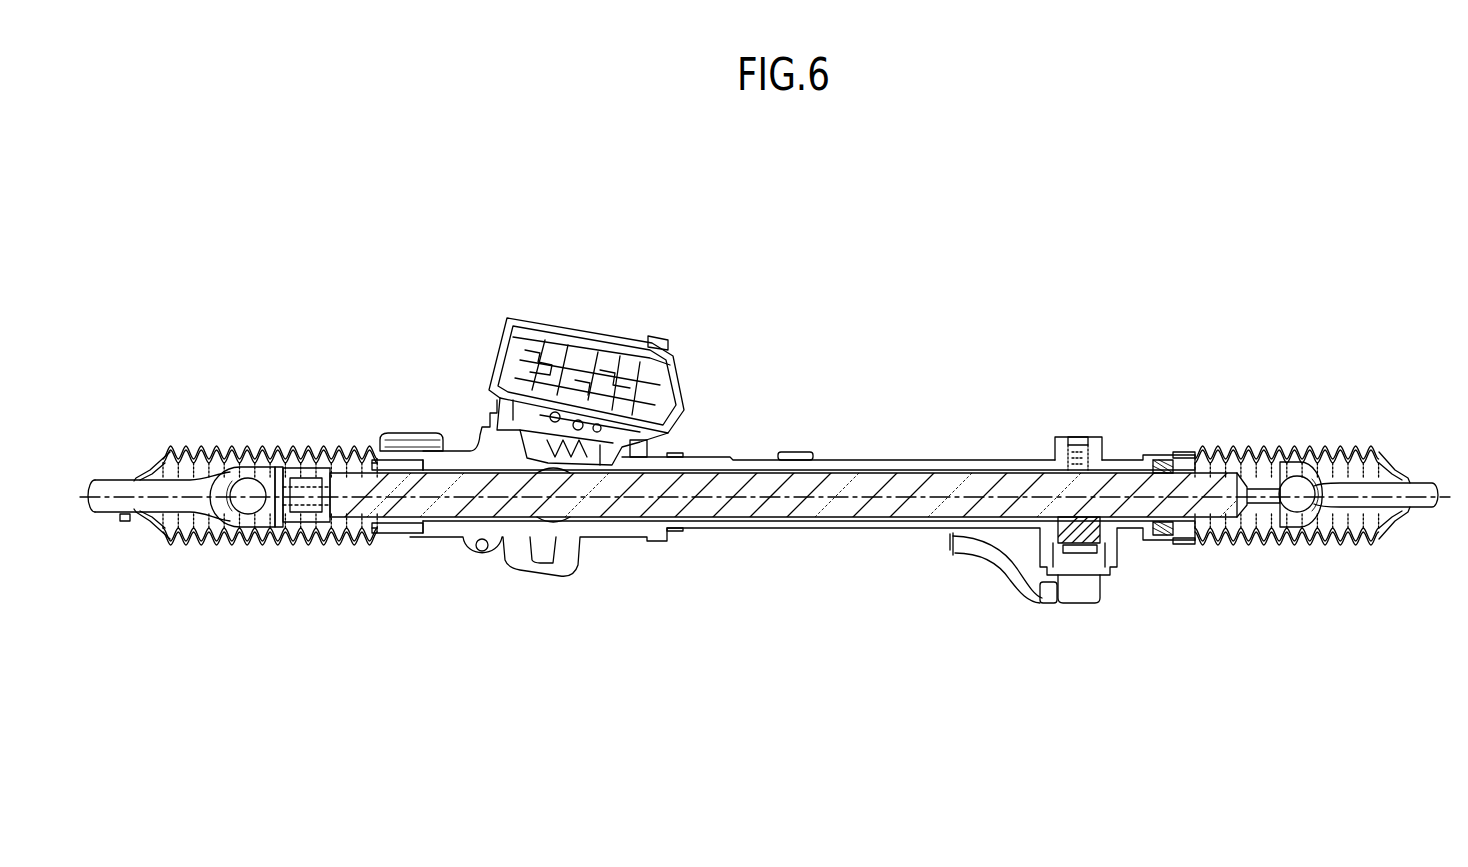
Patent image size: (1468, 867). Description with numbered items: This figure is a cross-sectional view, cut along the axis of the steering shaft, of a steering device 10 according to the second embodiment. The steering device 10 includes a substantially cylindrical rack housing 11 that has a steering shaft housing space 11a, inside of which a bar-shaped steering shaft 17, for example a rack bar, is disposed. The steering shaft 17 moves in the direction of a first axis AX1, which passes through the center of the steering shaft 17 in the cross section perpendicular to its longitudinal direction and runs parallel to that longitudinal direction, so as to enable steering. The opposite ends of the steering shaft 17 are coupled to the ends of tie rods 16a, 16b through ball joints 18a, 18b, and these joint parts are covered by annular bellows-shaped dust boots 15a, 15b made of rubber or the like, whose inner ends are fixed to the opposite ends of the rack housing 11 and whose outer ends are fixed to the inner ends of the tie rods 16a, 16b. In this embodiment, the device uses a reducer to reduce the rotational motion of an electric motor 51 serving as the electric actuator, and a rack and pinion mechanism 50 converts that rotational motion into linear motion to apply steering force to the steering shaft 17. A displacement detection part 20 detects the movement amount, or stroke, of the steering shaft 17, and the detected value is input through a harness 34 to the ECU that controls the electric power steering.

The steering device 10 is at (764, 345).
The rack housing 11 is at (842, 456).
The steering shaft housing space 11a is at (930, 463).
The dust boot 15a is at (302, 447).
The dust boot 15b is at (1279, 447).
The tie rod 16a is at (119, 481).
The tie rod 16b is at (1427, 482).
The steering shaft 17 is at (790, 510).
The ball joint 18a is at (250, 512).
The ball joint 18b is at (1299, 507).
The displacement detection part 20 is at (1087, 432).
The harness 34 is at (993, 558).
The rack and pinion mechanism 50 is at (592, 528).
The electric motor 51 is at (630, 345).
The first axis AX1 is at (722, 500).